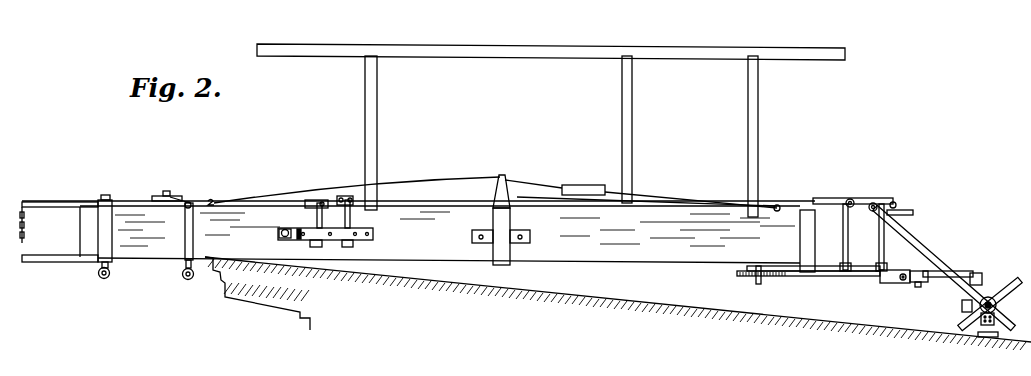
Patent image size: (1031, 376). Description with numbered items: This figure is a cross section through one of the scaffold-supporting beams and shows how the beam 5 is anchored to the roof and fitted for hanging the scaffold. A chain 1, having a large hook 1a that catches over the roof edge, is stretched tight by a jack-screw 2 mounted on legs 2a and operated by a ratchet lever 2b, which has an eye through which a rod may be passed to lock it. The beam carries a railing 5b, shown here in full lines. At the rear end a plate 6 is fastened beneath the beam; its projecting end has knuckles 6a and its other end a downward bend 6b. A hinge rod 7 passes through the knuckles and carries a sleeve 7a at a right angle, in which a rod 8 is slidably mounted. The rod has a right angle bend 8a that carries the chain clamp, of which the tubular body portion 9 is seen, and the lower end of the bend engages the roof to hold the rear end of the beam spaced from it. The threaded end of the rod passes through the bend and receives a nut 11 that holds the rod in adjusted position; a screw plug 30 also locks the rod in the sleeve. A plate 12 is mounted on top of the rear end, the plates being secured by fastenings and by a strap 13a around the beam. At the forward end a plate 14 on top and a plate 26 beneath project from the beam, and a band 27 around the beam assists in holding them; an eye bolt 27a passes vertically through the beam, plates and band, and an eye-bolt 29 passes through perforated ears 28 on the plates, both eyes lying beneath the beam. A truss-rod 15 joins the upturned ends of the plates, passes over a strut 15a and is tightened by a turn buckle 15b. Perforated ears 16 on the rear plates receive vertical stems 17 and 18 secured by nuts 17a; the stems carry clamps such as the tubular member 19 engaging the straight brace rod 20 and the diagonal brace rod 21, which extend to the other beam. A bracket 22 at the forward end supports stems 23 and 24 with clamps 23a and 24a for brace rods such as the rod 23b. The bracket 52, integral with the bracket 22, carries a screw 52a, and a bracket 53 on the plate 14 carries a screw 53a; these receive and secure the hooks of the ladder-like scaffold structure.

The chain 1 is at (992, 326).
The hook 1a is at (985, 338).
The jack-screw 2 is at (992, 296).
The legs 2a is at (960, 331).
The ratchet lever 2b is at (928, 247).
The beam 5 is at (681, 217).
The railing 5b is at (680, 57).
The plate 6 is at (783, 266).
The knuckles 6a is at (900, 284).
The downward bend 6b is at (760, 284).
The hinge rod 7 is at (903, 281).
The sleeve 7a is at (918, 271).
The rod 8 is at (823, 276).
The right angle bend 8a is at (982, 274).
The tubular body portion 9 is at (962, 303).
The nut 11 is at (751, 279).
The plate 12 is at (824, 208).
The strap 13a is at (806, 218).
The plate 14 is at (60, 205).
The truss-rod 15 is at (440, 186).
The strut 15a is at (507, 176).
The turn buckle 15b is at (592, 187).
The perforated ears 16 is at (882, 265).
The stem 17 is at (889, 233).
The nuts 17a is at (851, 272).
The stem 18 is at (846, 237).
The tubular member 19 is at (852, 200).
The brace rod 20 is at (876, 204).
The brace rod 21 is at (625, 205).
The bracket 22 is at (374, 235).
The stem 23 is at (313, 217).
The clamp 23a is at (312, 201).
The brace rod 23b is at (323, 202).
The stem 24 is at (352, 217).
The clamp 24a is at (352, 198).
The plate 26 is at (57, 262).
The band 27 is at (108, 213).
The eye bolt 27a is at (103, 279).
The perforated ears 28 is at (186, 208).
The eye-bolt 29 is at (187, 280).
The screw plug 30 is at (918, 288).
The bracket 52 is at (294, 241).
The screw 52a is at (279, 233).
The bracket 53 is at (164, 186).
The screw 53a is at (173, 195).